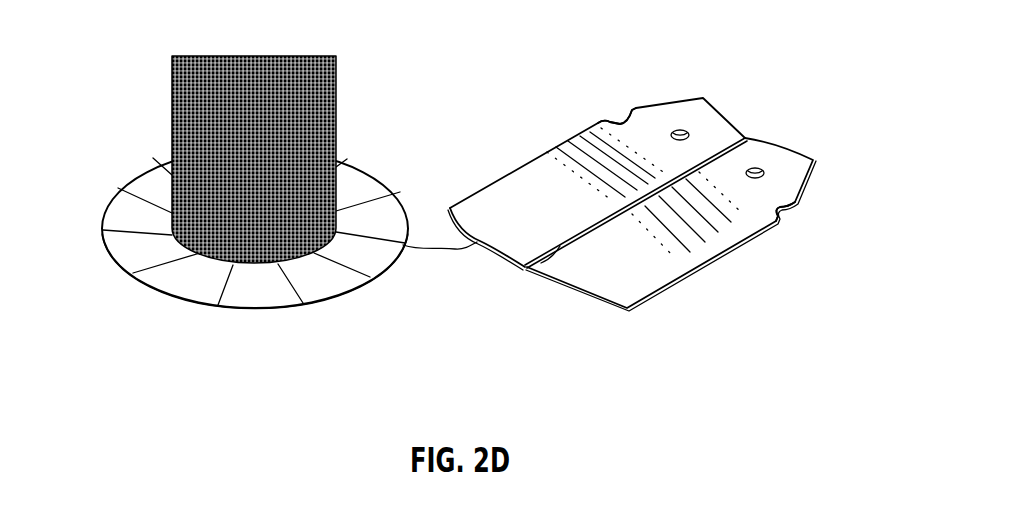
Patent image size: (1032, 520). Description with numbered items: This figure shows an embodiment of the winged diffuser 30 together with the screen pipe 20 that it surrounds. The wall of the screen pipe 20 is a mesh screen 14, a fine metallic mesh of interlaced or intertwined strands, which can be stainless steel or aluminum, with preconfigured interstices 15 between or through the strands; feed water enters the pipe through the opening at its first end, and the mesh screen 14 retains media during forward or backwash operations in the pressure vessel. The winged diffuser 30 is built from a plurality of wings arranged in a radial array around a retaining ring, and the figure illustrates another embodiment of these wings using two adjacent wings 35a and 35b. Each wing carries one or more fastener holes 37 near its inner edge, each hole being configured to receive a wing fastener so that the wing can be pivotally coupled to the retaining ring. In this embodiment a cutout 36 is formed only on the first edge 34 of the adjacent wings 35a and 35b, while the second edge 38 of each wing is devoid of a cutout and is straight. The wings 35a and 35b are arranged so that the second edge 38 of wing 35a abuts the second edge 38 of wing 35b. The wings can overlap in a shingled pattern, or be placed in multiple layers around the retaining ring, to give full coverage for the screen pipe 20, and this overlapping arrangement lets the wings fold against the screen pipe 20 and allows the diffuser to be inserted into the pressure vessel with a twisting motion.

The mesh screen 14 is at (170, 73).
The interstices 15 is at (221, 154).
The screen pipe 20 is at (337, 108).
The winged diffuser 30 is at (116, 210).
The first edge 34 is at (522, 165).
The wing 35a is at (477, 213).
The wing 35b is at (650, 278).
The cutout 36 is at (615, 120).
The fastener hole 37 is at (755, 167).
The second edge 38 is at (527, 269).